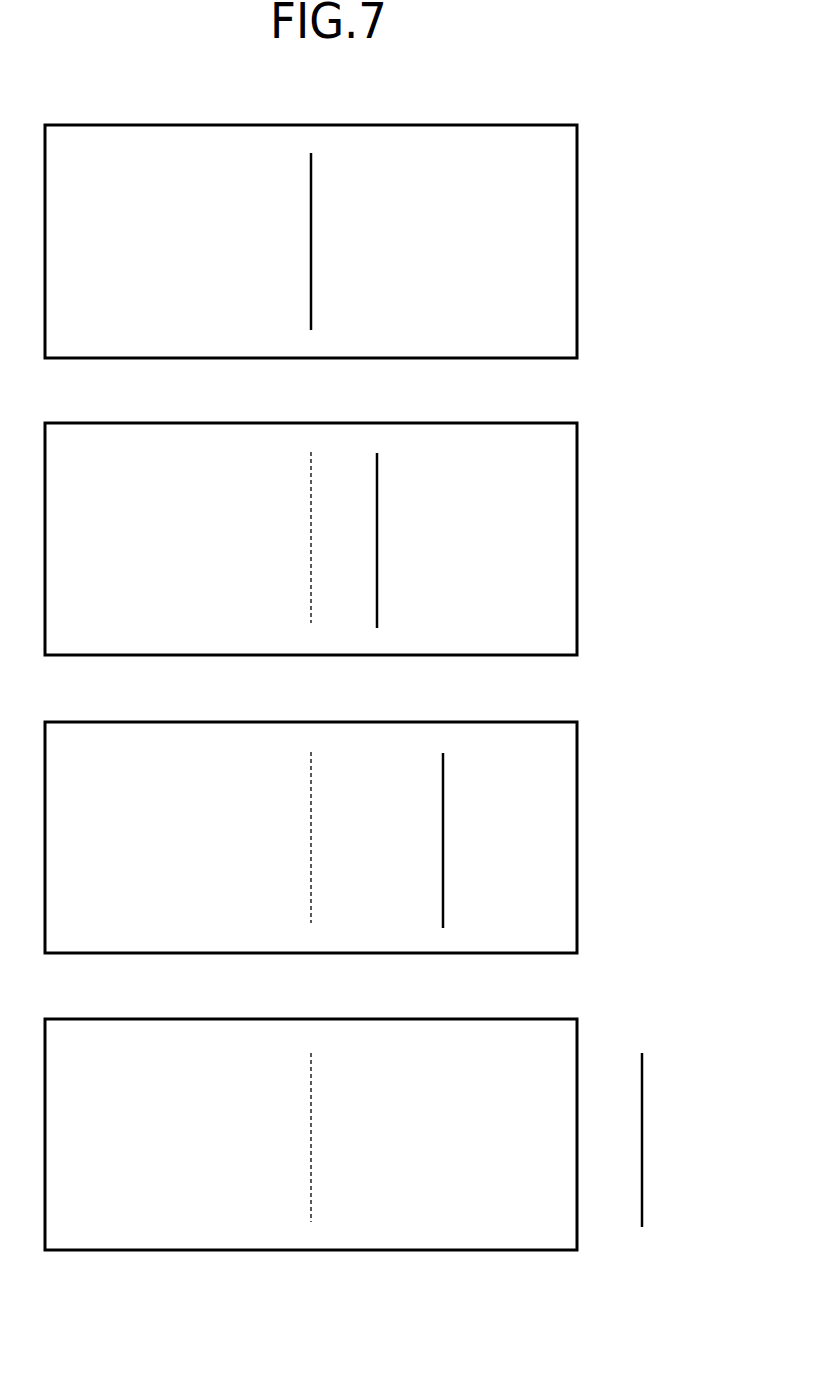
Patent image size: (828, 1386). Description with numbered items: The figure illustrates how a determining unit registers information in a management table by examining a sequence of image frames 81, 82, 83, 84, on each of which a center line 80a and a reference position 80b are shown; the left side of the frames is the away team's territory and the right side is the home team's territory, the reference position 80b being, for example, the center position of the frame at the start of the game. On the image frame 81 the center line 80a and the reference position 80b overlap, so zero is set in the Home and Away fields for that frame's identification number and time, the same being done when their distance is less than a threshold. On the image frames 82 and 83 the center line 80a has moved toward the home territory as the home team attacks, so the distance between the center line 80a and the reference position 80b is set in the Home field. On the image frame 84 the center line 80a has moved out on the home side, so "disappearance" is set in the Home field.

The image frame 81 is at (499, 124).
The image frame 82 is at (499, 422).
The image frame 83 is at (499, 721).
The image frame 84 is at (499, 1018).
The center line 80a is at (313, 168).
The reference position 80b is at (309, 183).